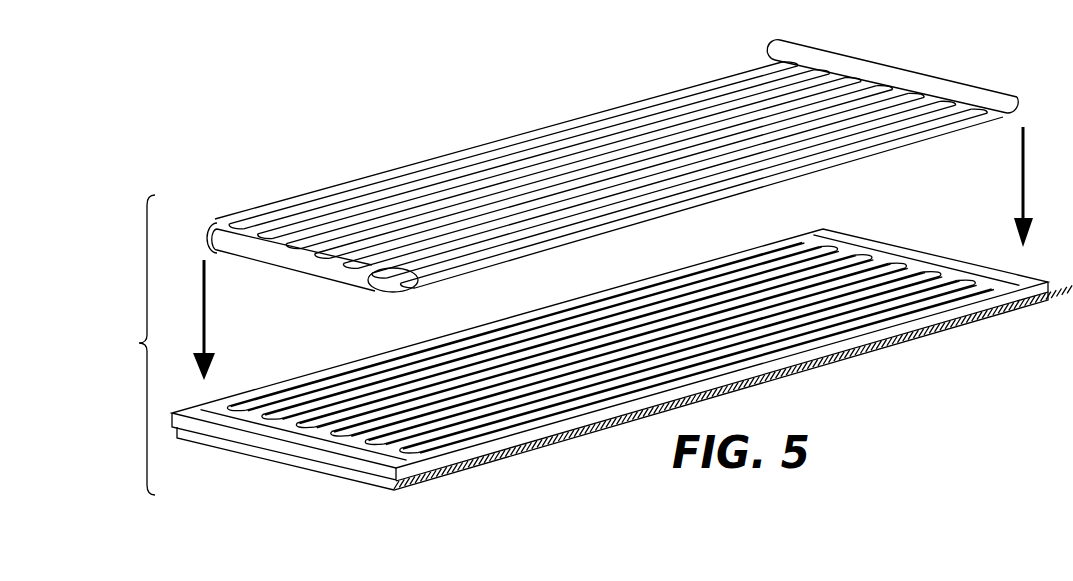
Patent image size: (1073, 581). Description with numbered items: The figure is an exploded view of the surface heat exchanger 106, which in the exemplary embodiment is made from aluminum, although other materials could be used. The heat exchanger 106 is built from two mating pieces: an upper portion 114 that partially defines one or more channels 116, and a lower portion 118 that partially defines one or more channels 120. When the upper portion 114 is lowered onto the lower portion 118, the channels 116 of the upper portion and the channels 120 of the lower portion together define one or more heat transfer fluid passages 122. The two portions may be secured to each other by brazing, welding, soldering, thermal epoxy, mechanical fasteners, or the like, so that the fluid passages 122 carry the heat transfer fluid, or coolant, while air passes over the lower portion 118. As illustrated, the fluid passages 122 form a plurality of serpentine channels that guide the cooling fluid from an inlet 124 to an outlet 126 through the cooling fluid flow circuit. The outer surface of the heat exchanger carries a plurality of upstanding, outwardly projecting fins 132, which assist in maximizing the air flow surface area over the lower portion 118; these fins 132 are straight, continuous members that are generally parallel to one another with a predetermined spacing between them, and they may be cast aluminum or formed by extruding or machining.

The surface heat exchanger 106 is at (140, 343).
The upper portion 114 is at (612, 146).
The channels 116 is at (422, 178).
The lower portion 118 is at (622, 358).
The channels 120 is at (818, 238).
The heat transfer fluid passages 122 is at (460, 152).
The inlet 124 is at (854, 56).
The outlet 126 is at (767, 52).
The fins 132 is at (443, 475).